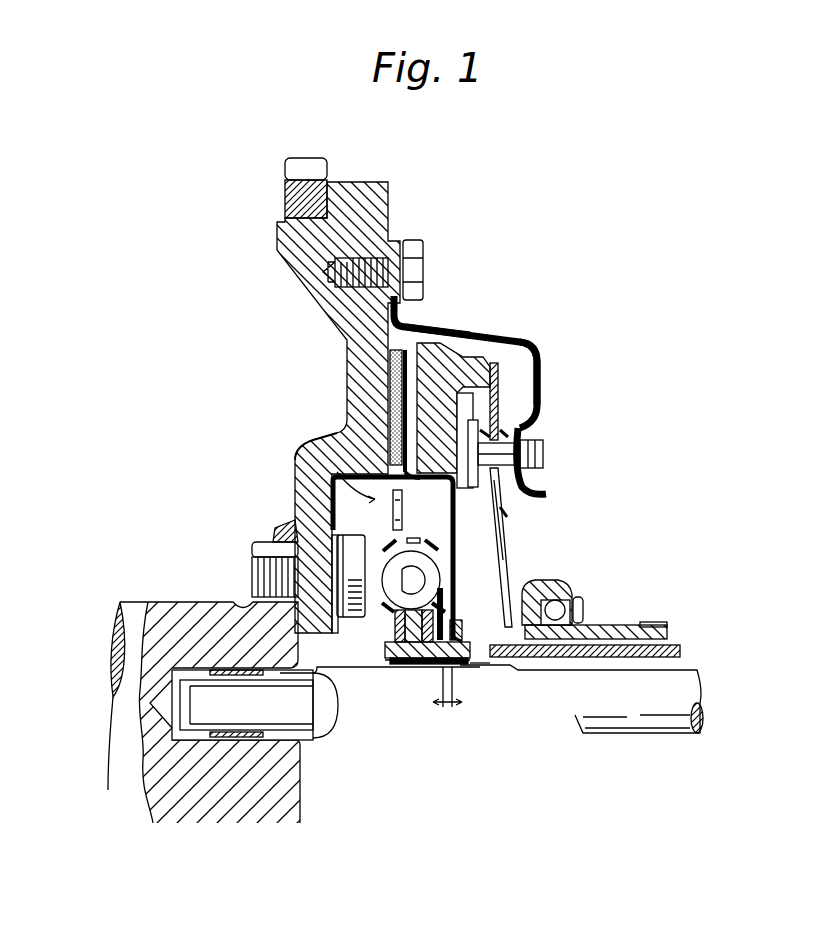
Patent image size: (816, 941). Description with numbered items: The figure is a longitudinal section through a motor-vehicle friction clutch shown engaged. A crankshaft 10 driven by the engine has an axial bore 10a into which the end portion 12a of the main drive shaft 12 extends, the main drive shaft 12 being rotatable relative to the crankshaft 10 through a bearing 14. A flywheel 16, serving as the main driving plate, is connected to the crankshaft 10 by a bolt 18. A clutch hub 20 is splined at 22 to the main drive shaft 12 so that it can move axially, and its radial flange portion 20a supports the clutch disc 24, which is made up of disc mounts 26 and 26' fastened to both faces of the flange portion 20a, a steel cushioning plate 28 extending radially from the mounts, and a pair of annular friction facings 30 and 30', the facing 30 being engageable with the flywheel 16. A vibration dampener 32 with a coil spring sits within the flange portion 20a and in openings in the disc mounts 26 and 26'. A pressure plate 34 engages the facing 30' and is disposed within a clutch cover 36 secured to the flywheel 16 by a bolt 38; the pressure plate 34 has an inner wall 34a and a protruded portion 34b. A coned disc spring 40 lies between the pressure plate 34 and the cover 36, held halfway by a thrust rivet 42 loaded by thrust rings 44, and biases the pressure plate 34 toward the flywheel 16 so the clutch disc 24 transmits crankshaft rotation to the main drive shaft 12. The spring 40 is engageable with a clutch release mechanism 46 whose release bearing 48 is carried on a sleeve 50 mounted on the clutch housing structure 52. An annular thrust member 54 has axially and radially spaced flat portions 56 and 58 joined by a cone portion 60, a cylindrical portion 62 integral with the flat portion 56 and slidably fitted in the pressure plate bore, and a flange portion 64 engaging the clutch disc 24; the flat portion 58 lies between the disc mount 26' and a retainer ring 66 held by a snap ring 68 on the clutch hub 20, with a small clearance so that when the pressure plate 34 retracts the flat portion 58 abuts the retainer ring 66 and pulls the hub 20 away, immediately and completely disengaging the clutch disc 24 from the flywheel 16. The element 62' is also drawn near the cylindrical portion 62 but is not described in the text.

The crankshaft 10 is at (178, 602).
The axial bore 10a is at (290, 738).
The main drive shaft 12 is at (672, 676).
The end portion 12a is at (290, 688).
The bearing 14 is at (267, 742).
The flywheel 16 is at (342, 364).
The bolt 18 is at (255, 566).
The clutch hub 20 is at (388, 648).
The flange portion 20a is at (395, 620).
The spline 22 is at (400, 663).
The clutch disc 24 is at (330, 474).
The disc mount 26 is at (333, 556).
The disc mount 26' is at (477, 669).
The cushioning plate 28 is at (318, 443).
The clutch friction facing 30 is at (465, 341).
The clutch friction facing 30' is at (452, 303).
The vibration dampener 32 is at (305, 503).
The pressure plate 34 is at (448, 360).
The inner wall or bore means 34a is at (490, 363).
The protruded portion 34b is at (547, 492).
The clutch cover 36 is at (531, 348).
The bolt 38 is at (415, 250).
The coned disc spring 40 is at (505, 537).
The thrust rivet 42 is at (545, 453).
The thrust ring 44 is at (481, 430).
The clutch release mechanism 46 is at (597, 603).
The clutch release bearing 48 is at (556, 592).
The sleeve 50 is at (620, 625).
The clutch housing structure 52 is at (672, 645).
The annular thrust member 54 is at (500, 517).
The flat portion 56 is at (458, 556).
The flat portion 58 is at (430, 660).
The cone portion 60 is at (485, 667).
The cylindrical portion 62 is at (419, 510).
The clip end 62' is at (507, 493).
The flange portion 64 is at (410, 462).
The retainer ring 66 is at (456, 612).
The snap ring 68 is at (455, 642).